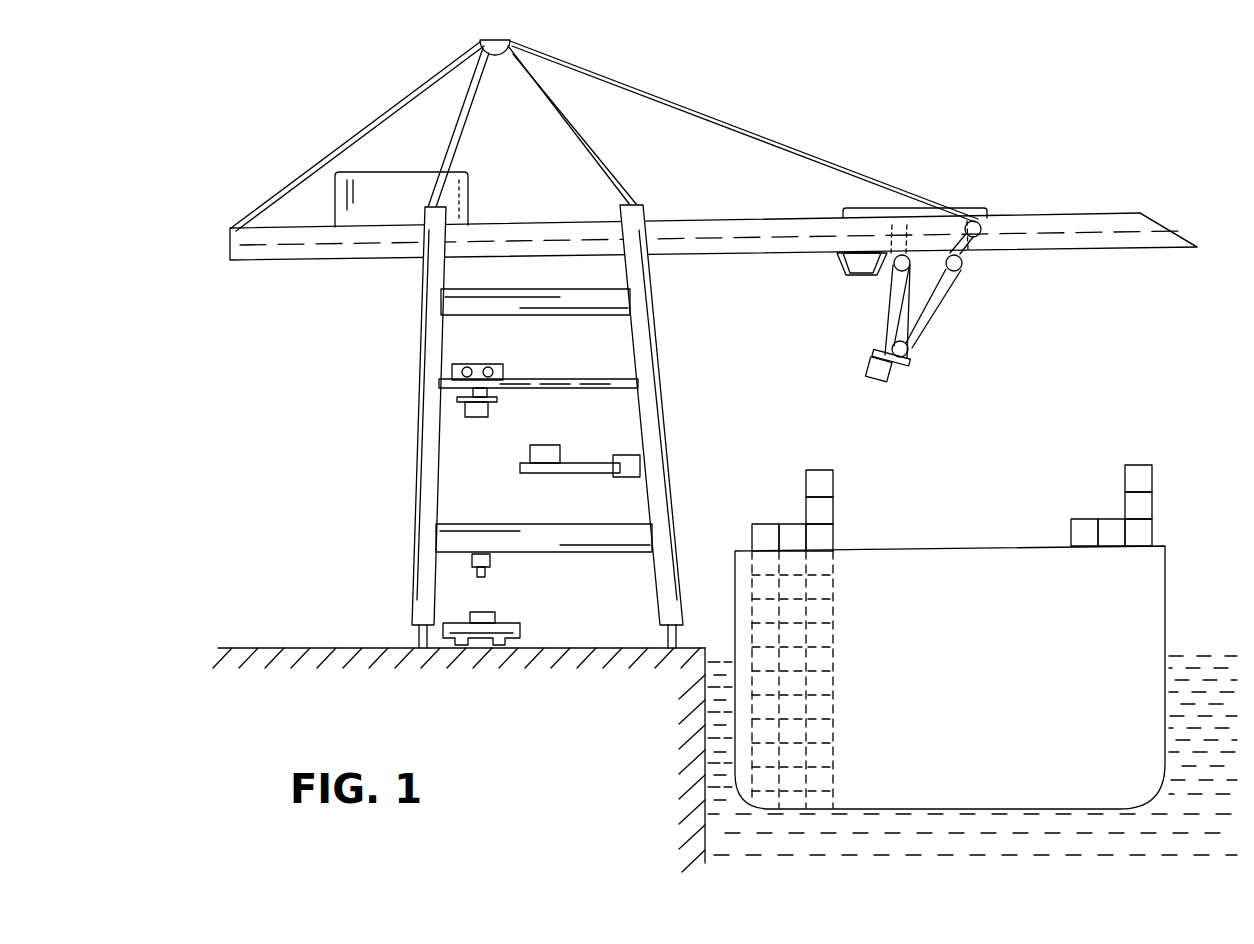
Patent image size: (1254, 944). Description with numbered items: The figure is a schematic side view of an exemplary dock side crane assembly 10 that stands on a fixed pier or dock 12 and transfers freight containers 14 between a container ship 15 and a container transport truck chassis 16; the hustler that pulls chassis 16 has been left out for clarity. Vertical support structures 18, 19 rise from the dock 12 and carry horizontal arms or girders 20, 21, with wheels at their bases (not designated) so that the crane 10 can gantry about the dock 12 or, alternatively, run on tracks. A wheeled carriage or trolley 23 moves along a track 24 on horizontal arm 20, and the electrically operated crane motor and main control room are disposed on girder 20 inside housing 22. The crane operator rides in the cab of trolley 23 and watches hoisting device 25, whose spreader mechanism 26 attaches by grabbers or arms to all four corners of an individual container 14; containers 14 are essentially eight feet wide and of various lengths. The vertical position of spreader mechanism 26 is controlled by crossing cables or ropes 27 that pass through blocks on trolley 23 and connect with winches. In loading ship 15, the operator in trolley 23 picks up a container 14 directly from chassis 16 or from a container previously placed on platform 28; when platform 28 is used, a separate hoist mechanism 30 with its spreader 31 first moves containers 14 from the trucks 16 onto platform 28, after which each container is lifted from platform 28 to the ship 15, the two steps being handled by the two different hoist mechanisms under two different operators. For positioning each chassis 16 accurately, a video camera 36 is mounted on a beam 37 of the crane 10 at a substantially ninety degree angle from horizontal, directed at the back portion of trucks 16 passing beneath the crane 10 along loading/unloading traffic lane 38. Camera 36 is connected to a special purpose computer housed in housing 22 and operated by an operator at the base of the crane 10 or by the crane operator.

The crane assembly 10 is at (243, 352).
The dock 12 is at (298, 647).
The freight container 14 is at (883, 387).
The container ship 15 is at (1166, 564).
The container transport chassis 16 is at (522, 633).
The vertical support structure 18 is at (660, 423).
The vertical support structure 19 is at (417, 410).
The horizontal arm 20 is at (706, 221).
The horizontal arm 21 is at (588, 379).
The housing 22 is at (404, 176).
The trolley 23 is at (838, 262).
The track 24 is at (1122, 233).
The hoisting device 25 is at (966, 283).
The spreader mechanism 26 is at (905, 368).
The ropes 27 is at (882, 337).
The platform 28 is at (570, 474).
The hoist mechanism 30 is at (473, 364).
The spreader 31 is at (500, 400).
The video camera 36 is at (492, 560).
The beam 37 is at (589, 550).
The loading/unloading traffic lane 38 is at (606, 650).